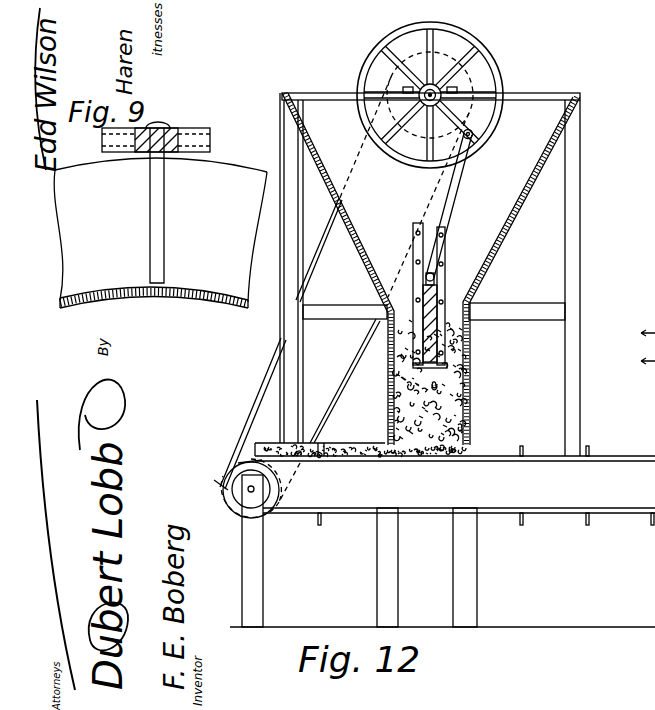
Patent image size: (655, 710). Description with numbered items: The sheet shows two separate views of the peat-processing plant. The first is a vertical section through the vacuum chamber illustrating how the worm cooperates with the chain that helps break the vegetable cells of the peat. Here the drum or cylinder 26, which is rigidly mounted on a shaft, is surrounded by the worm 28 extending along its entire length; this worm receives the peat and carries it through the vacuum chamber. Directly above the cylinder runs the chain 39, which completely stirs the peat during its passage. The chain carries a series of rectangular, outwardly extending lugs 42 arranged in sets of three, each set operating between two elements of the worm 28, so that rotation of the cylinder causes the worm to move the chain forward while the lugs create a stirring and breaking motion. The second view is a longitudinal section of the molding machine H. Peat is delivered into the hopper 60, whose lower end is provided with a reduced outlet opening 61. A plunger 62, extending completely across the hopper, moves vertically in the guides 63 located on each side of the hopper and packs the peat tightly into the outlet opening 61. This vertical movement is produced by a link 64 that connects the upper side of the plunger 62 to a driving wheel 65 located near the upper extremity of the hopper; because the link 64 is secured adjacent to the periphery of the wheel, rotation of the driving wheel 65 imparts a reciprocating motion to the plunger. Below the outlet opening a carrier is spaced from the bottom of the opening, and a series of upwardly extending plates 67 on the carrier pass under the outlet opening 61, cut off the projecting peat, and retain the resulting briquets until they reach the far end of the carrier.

In FIG. 9, the drum or cylinder 26 is at (183, 296).
In FIG. 9, the worm 28 is at (228, 178).
In FIG. 9, the chain 39 is at (190, 133).
In FIG. 9, the lugs 42 is at (158, 243).
In FIG. 12, the hopper 60 is at (431, 133).
In FIG. 12, the reduced outlet opening 61 is at (468, 402).
In FIG. 12, the plunger 62 is at (437, 326).
In FIG. 12, the guides 63 is at (413, 232).
In FIG. 12, the link 64 is at (456, 205).
In FIG. 12, the driving wheel 65 is at (497, 68).
In FIG. 12, the plates 67 is at (320, 443).
In FIG. 12, the molding machine H is at (582, 278).